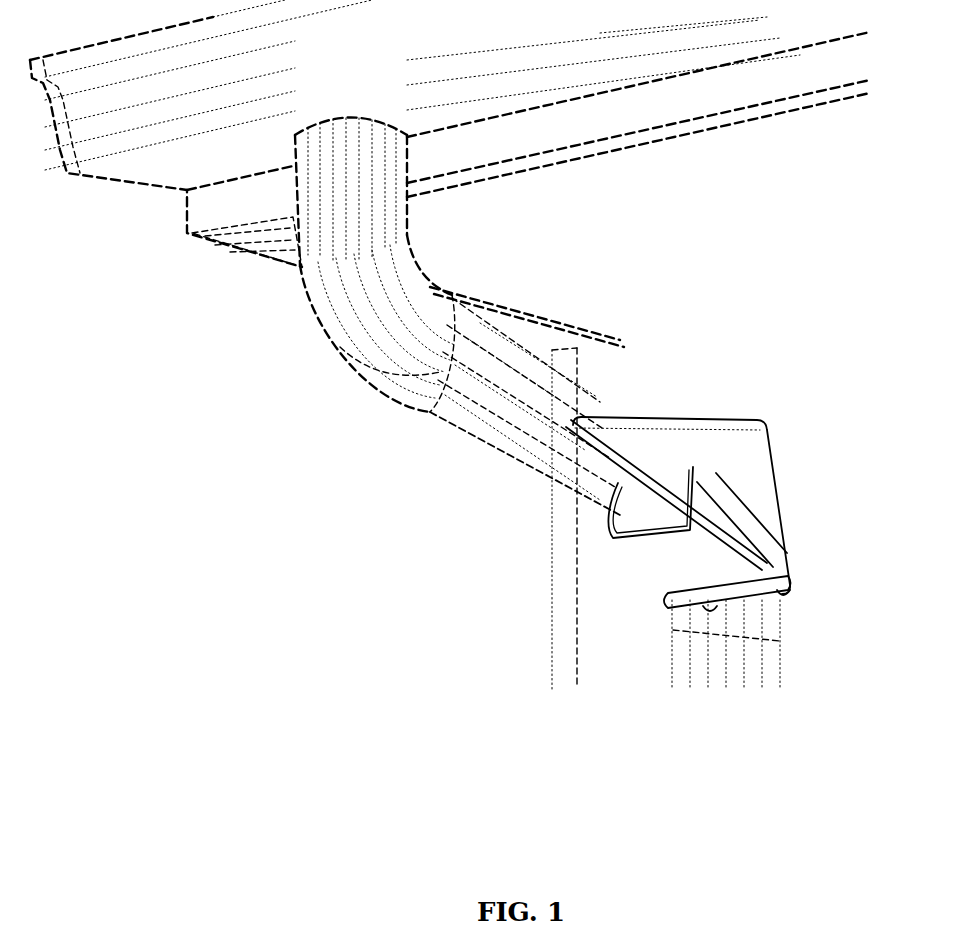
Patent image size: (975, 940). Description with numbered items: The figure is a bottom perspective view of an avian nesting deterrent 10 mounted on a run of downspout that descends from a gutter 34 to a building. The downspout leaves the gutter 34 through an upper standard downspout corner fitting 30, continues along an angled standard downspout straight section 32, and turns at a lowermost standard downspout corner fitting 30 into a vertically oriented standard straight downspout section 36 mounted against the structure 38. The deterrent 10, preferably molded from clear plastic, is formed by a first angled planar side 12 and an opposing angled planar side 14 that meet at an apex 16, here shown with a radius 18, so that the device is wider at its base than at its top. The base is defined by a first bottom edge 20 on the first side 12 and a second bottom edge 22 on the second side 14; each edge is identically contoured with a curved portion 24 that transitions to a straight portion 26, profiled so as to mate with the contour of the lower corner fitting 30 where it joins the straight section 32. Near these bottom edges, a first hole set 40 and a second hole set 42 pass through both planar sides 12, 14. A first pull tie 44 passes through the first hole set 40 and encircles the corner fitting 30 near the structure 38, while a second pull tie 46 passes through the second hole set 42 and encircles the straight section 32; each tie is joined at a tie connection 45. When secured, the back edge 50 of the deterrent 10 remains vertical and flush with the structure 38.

The avian nesting deterrent 10 is at (858, 342).
The first angled planar side 12 is at (757, 462).
The opposing angled planar side 14 is at (610, 445).
The apex 16 is at (667, 418).
The radius 18 is at (760, 417).
The first bottom edge 20 is at (707, 497).
The second bottom edge 22 is at (612, 498).
The curved portion 24 is at (660, 567).
The straight portion 26 is at (600, 455).
The standard downspout corner fitting 30 is at (337, 310).
The standard downspout straight section 32 is at (440, 382).
The gutter 34 is at (167, 173).
The vertically oriented standard straight downspout section 36 is at (733, 663).
The structure 38 is at (607, 676).
The first hole set 40 is at (720, 580).
The second hole set 42 is at (620, 470).
The first pull tie 44 is at (723, 590).
The tie connection 45 is at (690, 533).
The second pull tie 46 is at (640, 543).
The back edge 50 is at (767, 440).